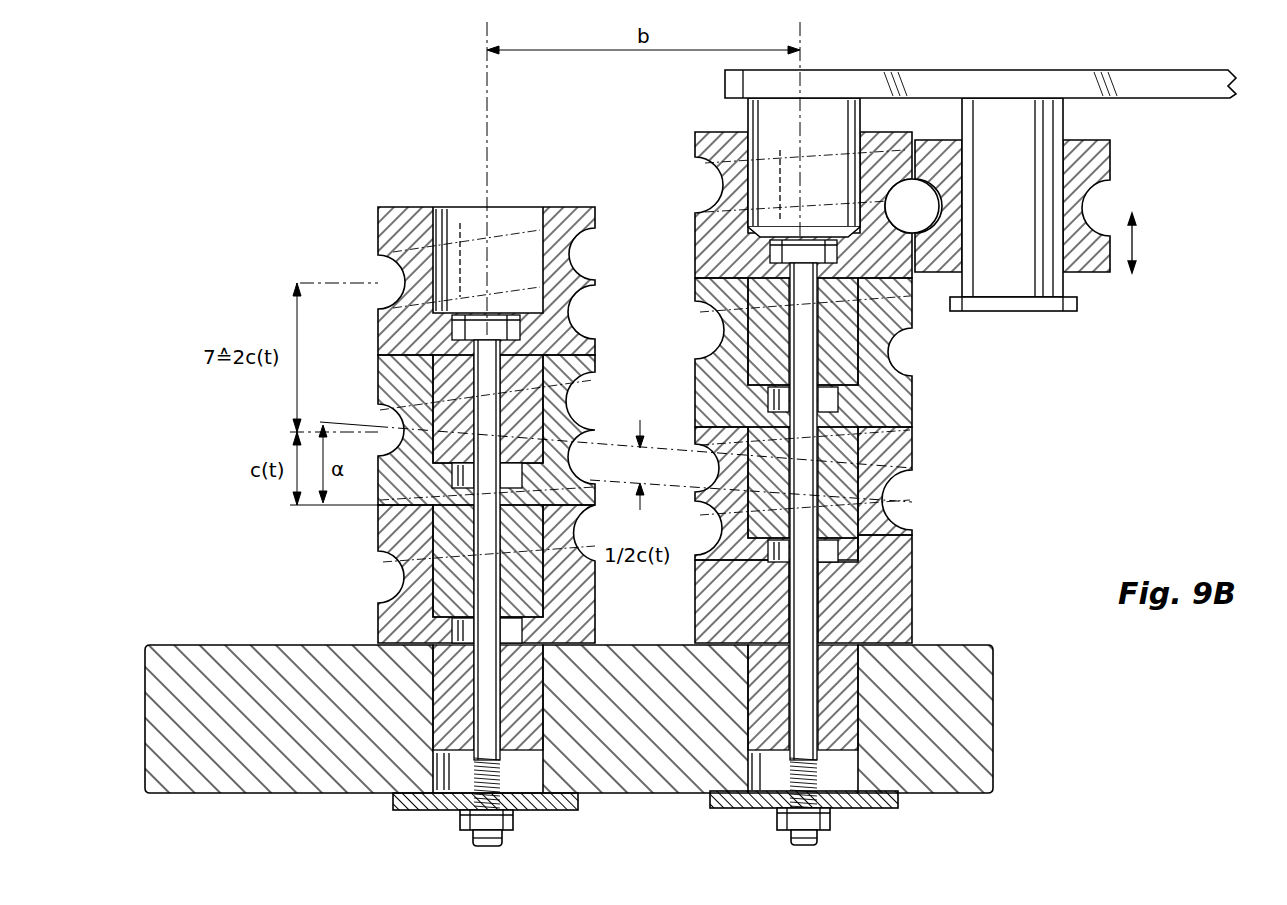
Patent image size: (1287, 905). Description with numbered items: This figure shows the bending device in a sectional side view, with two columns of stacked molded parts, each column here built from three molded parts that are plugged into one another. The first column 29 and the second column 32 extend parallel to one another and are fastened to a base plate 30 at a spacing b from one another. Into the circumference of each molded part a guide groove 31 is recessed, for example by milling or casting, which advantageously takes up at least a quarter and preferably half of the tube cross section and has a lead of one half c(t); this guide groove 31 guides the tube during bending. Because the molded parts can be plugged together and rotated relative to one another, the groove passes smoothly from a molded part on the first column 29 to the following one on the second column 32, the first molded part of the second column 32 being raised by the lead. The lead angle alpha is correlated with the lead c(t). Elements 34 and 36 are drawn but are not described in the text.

The first column 29 is at (602, 806).
The base plate 30 is at (988, 710).
The guide groove 31 is at (383, 276).
The second column 32 is at (918, 806).
The bearing block 34 is at (1105, 150).
The support plate 36 is at (1123, 78).